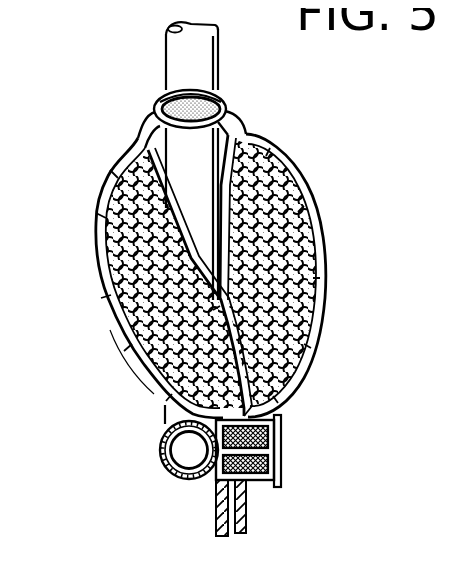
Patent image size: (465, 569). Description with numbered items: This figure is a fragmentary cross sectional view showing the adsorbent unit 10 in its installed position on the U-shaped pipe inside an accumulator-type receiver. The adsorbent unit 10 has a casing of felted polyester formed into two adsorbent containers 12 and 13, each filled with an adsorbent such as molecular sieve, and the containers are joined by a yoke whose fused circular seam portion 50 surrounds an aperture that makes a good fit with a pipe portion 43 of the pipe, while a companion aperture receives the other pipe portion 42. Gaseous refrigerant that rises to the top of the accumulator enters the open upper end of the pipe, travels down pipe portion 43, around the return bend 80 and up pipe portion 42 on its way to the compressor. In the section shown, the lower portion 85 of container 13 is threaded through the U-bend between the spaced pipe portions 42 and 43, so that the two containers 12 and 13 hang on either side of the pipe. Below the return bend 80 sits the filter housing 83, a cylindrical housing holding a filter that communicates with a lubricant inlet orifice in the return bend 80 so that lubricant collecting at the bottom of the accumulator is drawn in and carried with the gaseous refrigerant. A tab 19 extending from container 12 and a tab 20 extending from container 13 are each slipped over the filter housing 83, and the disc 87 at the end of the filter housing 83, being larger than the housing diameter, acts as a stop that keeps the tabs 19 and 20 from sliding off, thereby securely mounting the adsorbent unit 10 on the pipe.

The adsorbent unit 10 is at (298, 139).
The pipe portion 42 is at (192, 58).
The adsorbent container 12 is at (312, 247).
The adsorbent container 13 is at (97, 280).
The lower portion 85 is at (143, 377).
The return bend 80 is at (160, 478).
The filter housing 83 is at (275, 420).
The disc 87 is at (273, 470).
The tab 20 is at (212, 528).
The tab 19 is at (232, 532).
The circular seam portion 50 is at (464, 358).
The pipe portion 43 is at (464, 400).